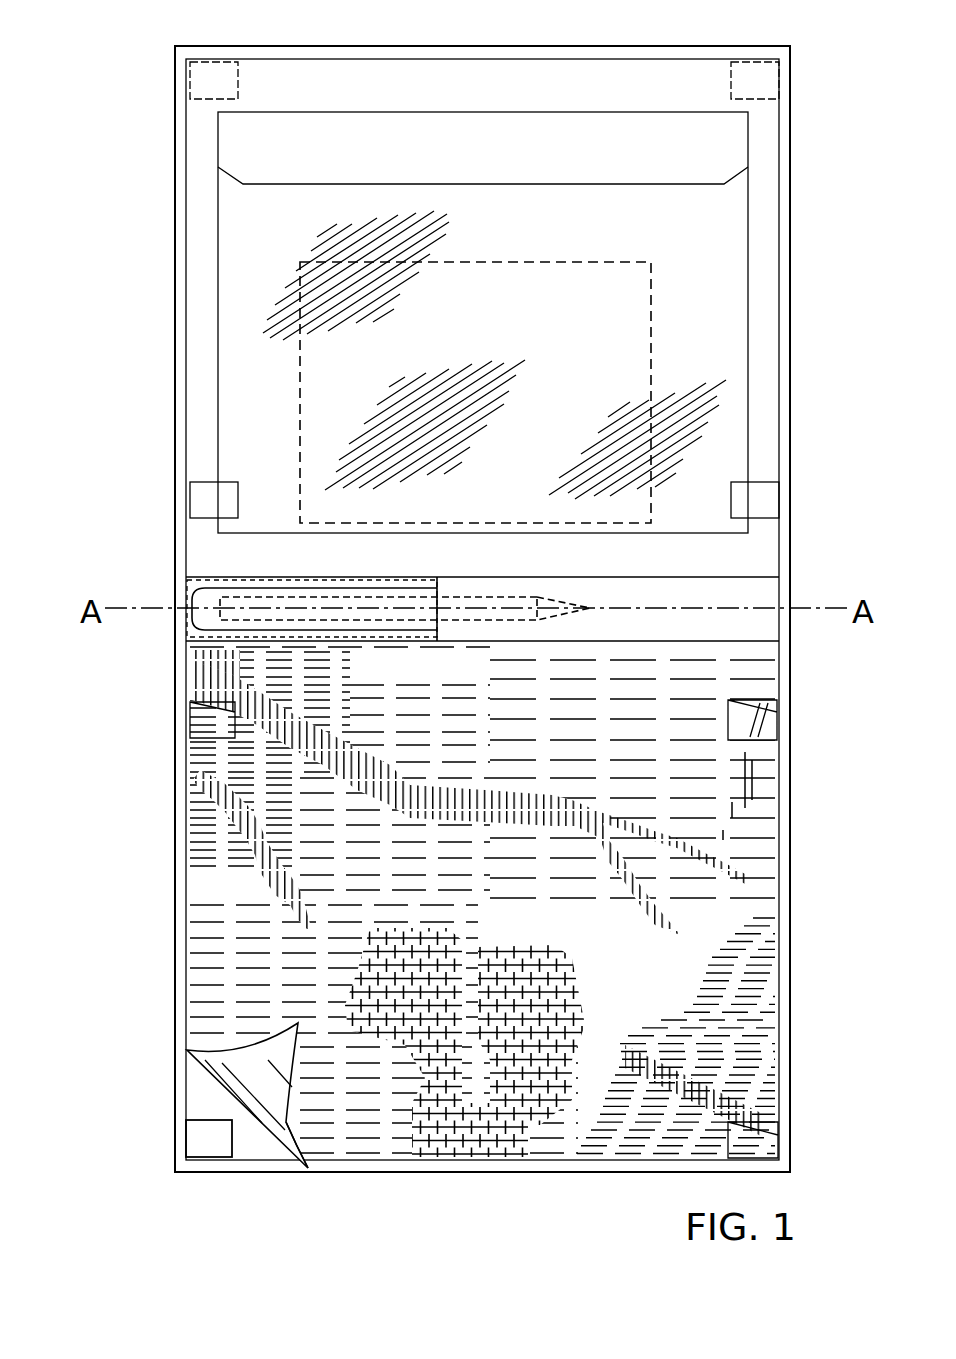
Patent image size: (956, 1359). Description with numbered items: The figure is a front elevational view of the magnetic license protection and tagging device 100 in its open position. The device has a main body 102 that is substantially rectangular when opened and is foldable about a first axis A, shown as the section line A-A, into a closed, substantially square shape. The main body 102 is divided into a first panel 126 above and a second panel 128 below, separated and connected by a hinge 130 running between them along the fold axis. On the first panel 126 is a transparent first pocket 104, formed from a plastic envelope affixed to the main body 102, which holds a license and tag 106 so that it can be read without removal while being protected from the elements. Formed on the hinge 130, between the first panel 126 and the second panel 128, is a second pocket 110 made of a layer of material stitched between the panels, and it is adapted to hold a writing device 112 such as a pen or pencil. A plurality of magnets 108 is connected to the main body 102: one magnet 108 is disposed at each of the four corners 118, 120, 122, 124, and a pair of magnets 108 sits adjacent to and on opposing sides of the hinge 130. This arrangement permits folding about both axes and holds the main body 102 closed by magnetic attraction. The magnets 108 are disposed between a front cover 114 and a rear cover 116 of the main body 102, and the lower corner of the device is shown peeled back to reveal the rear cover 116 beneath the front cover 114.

The magnetic license protection and tagging device 100 is at (96, 76).
The main body 102 is at (793, 168).
The first pocket 104 is at (710, 363).
The license and tag 106 is at (645, 452).
The magnet 108 is at (193, 92).
The second pocket 110 is at (238, 646).
The writing device 112 is at (478, 622).
The front cover 114 is at (190, 1080).
The rear cover 116 is at (285, 1118).
The corner 118 is at (177, 45).
The corner 120 is at (792, 45).
The corner 122 is at (171, 1173).
The corner 124 is at (793, 1173).
The first panel 126 is at (160, 308).
The second panel 128 is at (171, 909).
The hinge 130 is at (171, 589).